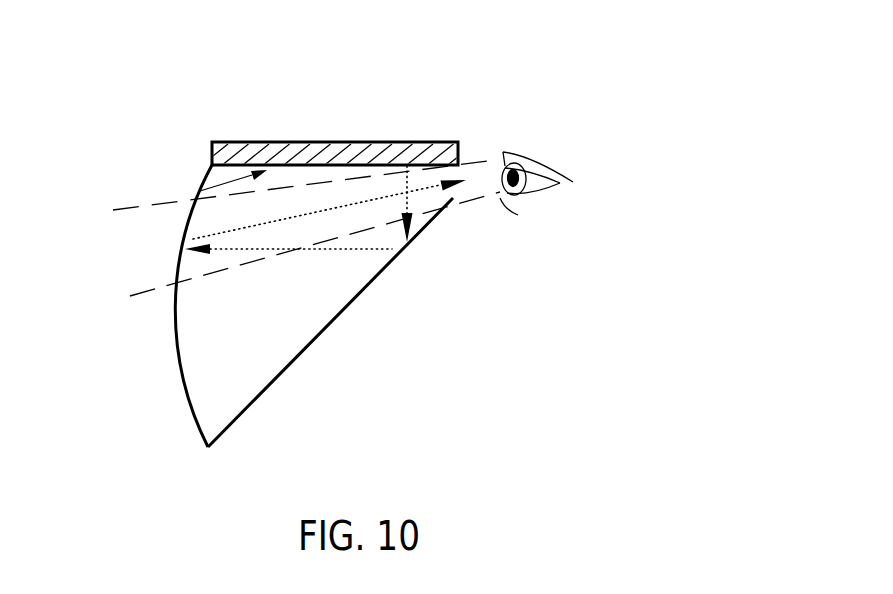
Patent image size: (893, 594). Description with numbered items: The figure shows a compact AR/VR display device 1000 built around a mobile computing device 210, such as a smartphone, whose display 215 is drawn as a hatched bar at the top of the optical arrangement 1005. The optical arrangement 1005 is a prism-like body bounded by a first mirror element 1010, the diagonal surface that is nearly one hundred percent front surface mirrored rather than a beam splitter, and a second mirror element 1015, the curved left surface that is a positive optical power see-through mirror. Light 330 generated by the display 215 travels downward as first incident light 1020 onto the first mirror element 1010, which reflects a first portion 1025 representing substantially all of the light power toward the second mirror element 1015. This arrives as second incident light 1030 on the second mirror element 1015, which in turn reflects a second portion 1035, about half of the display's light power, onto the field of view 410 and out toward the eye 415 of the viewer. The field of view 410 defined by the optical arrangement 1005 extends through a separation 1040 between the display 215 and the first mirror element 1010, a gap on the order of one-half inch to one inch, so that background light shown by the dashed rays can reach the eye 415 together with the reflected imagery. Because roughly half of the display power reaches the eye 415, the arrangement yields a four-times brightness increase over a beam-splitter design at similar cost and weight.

The compact AR/VR display device 1000 is at (613, 68).
The mobile computing device 210 is at (268, 143).
The display 215 is at (195, 190).
The light 330 is at (397, 166).
The field of view 410 is at (140, 268).
The eye 415 is at (540, 163).
The optical arrangement 1005 is at (438, 410).
The first mirror element 1010 is at (318, 335).
The second mirror element 1015 is at (185, 388).
The first incident light 1020 is at (412, 226).
The first portion 1025 is at (378, 250).
The second incident light 1030 is at (193, 253).
The second portion 1035 is at (197, 236).
The separation 1040 is at (461, 174).